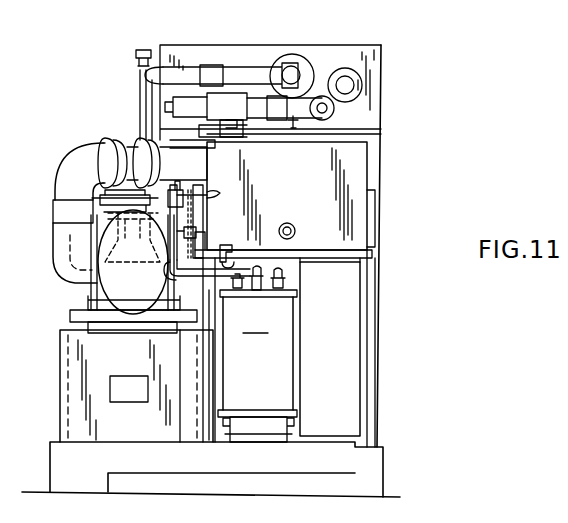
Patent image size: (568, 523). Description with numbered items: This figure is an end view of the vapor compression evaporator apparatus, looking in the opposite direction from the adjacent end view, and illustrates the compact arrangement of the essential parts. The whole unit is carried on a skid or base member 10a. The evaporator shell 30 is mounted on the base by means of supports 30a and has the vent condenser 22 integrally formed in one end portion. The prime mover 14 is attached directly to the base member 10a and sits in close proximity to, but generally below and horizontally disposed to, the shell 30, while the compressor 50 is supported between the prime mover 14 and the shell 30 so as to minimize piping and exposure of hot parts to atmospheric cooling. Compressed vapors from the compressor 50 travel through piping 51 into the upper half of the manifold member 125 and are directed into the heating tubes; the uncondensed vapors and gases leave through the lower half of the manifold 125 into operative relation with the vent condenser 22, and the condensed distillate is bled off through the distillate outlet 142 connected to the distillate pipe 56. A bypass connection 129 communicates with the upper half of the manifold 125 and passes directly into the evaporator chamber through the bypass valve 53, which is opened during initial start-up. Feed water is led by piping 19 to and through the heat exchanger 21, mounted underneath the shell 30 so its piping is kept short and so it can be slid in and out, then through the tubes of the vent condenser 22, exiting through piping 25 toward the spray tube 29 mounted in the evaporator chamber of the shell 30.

The base member 10a is at (375, 460).
The prime mover 14 is at (68, 376).
The piping 19 is at (182, 220).
The heat exchanger 21 is at (250, 350).
The vent condenser 22 is at (370, 208).
The piping 25 is at (190, 232).
The spray tube 29 is at (290, 73).
The evaporator shell 30 is at (375, 117).
The supports 30a is at (373, 315).
The compressor 50 is at (113, 275).
The piping 51 is at (83, 153).
The bypass valve 53 is at (228, 100).
The distillate pipe 56 is at (234, 263).
The manifold member 125 is at (362, 160).
The bypass connection 129 is at (225, 134).
The distillate outlet 142 is at (230, 255).